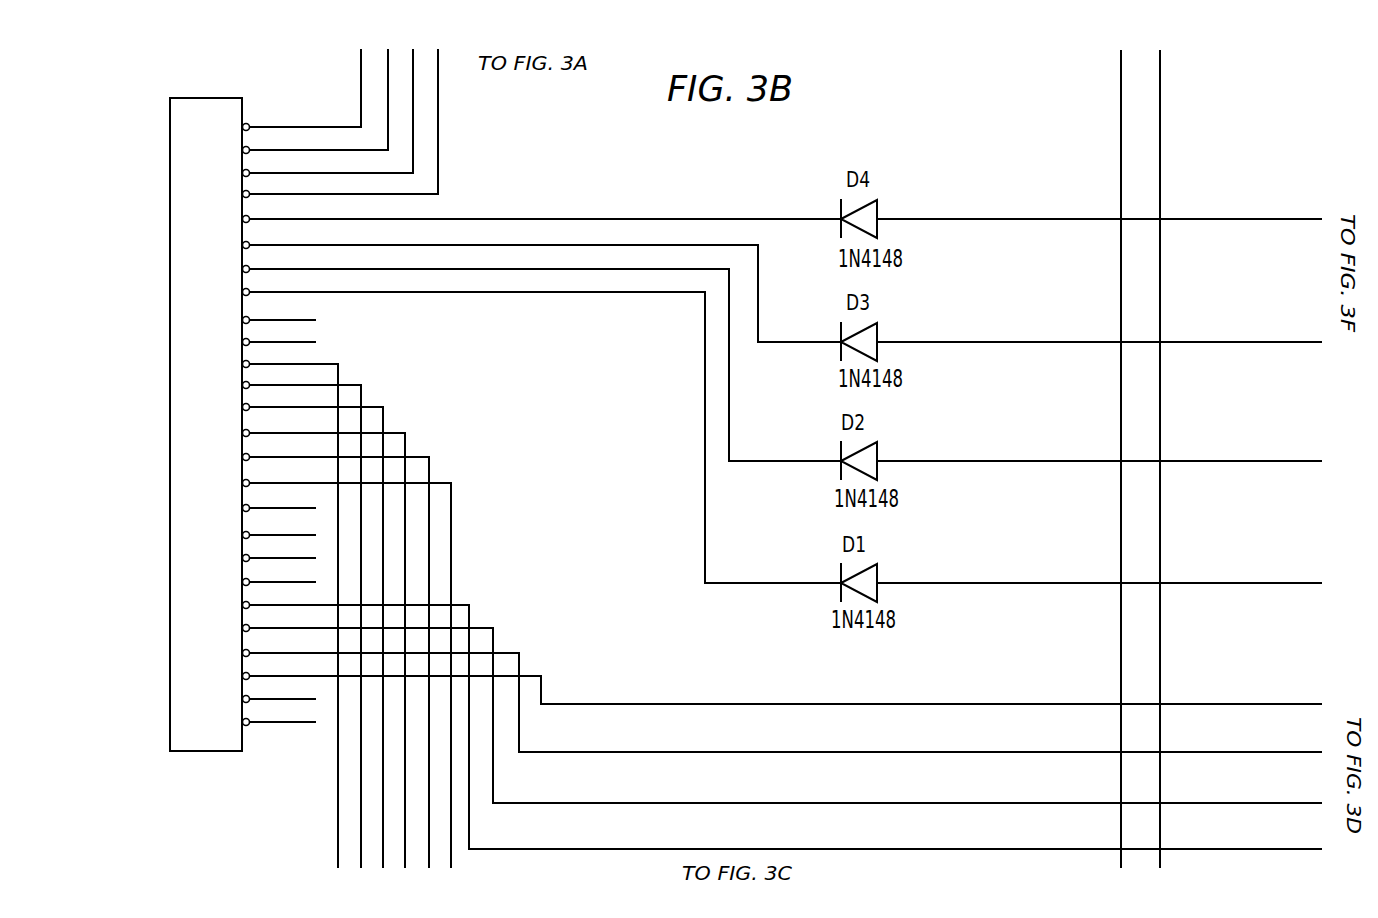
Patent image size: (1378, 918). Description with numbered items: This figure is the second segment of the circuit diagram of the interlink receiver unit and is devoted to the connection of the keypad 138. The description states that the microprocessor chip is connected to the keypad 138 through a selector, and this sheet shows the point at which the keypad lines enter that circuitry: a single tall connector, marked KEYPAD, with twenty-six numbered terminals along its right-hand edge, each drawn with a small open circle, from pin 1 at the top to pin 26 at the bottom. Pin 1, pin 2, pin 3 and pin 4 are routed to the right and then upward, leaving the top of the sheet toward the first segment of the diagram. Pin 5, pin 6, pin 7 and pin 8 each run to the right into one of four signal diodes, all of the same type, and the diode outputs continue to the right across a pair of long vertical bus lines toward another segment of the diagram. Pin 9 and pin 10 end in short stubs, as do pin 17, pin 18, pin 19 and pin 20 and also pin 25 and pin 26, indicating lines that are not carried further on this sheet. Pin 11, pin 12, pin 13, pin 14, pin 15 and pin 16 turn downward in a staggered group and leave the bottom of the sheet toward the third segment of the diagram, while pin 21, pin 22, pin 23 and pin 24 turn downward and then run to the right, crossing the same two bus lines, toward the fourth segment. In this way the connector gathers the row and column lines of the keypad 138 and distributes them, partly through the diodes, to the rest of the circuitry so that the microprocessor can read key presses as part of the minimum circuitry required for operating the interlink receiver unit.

The keypad 138 is at (707, 458).
The connector pin 1 is at (290, 94).
The connector pin 2 is at (303, 106).
The connector pin 3 is at (316, 117).
The connector pin 4 is at (328, 128).
The connector pin 5 is at (530, 219).
The connector pin 6 is at (530, 287).
The connector pin 7 is at (530, 359).
The connector pin 8 is at (530, 431).
The connector pin 9 is at (267, 320).
The connector pin 10 is at (261, 342).
The connector pin 11 is at (272, 610).
The host computer 12 is at (284, 620).
The connector pin 13 is at (295, 631).
The interlink receiver unit 14 is at (306, 644).
The connector pin 15 is at (318, 656).
The connector pin 16 is at (329, 669).
The connector pin 17 is at (261, 508).
The phone unit 18 is at (261, 535).
The connector pin 19 is at (261, 558).
The connector pin 20 is at (261, 582).
The connector pin 21 is at (764, 721).
The connector pin 22 is at (764, 709).
The connector pin 23 is at (764, 696).
The connector pin 24 is at (764, 684).
The connector pin 25 is at (261, 699).
The connector pin 26 is at (261, 722).